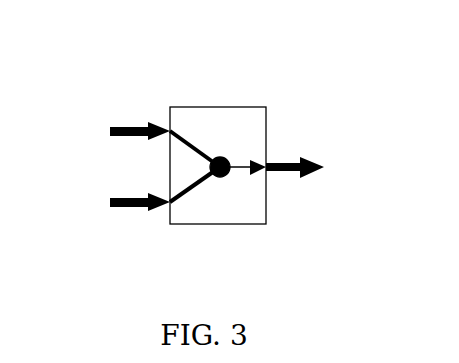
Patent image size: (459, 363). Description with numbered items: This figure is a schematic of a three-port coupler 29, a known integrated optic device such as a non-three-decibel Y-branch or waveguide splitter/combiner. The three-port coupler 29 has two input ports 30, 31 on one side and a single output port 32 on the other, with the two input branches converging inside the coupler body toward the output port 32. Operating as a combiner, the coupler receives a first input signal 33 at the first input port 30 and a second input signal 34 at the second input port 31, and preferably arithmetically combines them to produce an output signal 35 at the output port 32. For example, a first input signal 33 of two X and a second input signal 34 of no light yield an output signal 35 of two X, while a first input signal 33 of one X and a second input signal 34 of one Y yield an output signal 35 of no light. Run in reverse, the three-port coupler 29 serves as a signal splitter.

The 3-port coupler 29 is at (218, 107).
The first input port 30 is at (169, 130).
The second input port 31 is at (170, 200).
The output port 32 is at (267, 166).
The first input signal 33 is at (120, 125).
The second input signal 34 is at (120, 205).
The output signal 35 is at (287, 172).